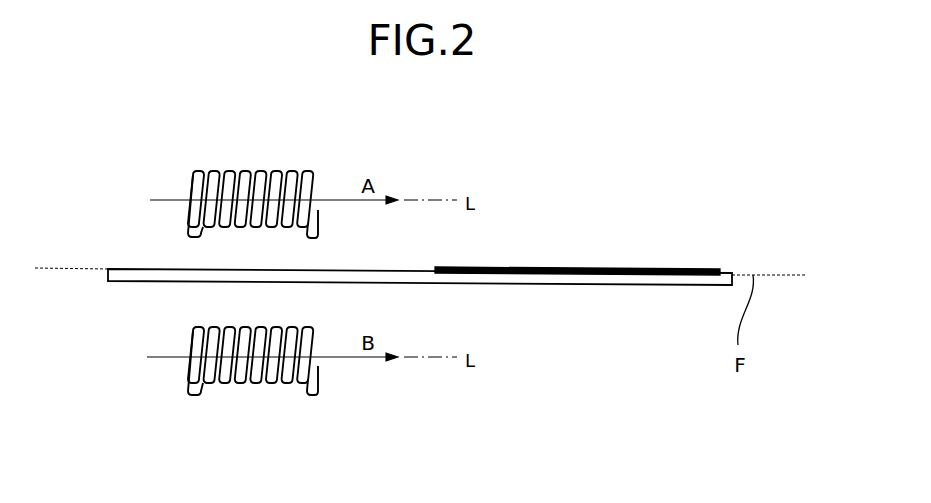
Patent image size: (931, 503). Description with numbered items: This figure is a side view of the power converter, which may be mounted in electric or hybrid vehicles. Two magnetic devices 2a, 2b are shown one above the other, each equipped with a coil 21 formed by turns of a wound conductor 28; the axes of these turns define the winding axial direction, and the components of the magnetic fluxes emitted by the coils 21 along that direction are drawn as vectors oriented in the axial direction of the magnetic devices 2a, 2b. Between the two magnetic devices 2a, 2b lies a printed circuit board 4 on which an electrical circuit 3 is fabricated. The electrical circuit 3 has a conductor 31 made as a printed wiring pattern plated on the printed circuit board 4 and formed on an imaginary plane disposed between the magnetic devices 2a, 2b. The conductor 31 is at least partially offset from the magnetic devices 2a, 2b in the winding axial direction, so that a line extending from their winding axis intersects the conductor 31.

The magnetic device 2a is at (283, 183).
The magnetic device 2b is at (288, 378).
The coil 21 is at (251, 281).
The conductor of the coil 28 is at (318, 190).
The electrical circuit 3 is at (420, 236).
The conductor 31 is at (663, 183).
The printed circuit board 4 is at (130, 282).